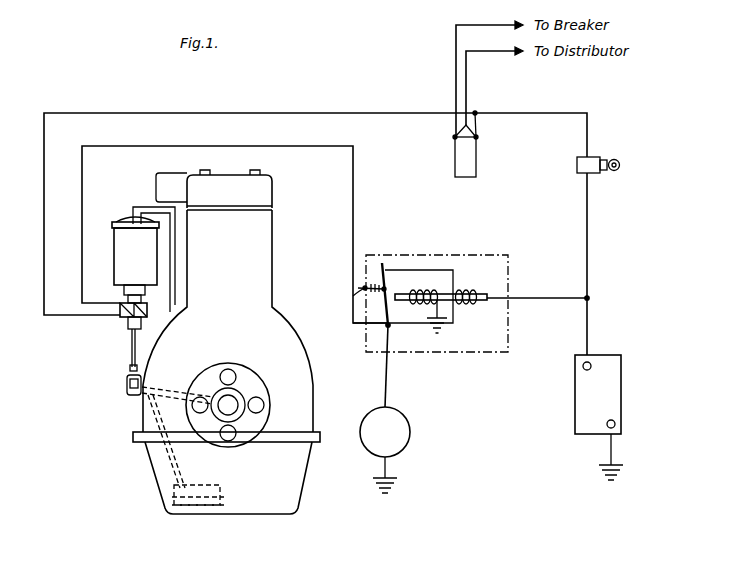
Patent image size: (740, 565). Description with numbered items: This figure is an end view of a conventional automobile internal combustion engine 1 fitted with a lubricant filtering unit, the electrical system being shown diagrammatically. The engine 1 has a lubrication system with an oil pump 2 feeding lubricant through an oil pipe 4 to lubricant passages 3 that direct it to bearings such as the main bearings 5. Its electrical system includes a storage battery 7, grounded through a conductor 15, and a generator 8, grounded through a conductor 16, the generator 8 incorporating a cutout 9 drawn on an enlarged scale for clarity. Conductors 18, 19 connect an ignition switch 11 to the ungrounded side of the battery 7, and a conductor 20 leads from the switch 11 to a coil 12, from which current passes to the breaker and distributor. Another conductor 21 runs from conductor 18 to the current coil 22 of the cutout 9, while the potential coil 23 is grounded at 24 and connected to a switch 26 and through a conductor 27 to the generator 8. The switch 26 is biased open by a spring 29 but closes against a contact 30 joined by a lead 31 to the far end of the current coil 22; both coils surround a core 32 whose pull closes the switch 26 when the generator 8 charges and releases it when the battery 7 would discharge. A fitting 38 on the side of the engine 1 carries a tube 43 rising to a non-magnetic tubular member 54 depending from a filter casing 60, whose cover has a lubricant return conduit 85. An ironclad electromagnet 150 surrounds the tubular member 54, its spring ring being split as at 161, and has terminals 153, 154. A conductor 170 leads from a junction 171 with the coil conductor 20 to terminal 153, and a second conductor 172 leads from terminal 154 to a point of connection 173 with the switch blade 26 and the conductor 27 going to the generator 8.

The internal combustion engine 1 is at (276, 256).
The oil pump 2 is at (196, 485).
The lubricant passages 3 is at (140, 402).
The oil pipe 4 is at (162, 455).
The main bearings 5 is at (226, 395).
The storage battery 7 is at (577, 401).
The generator 8 is at (412, 433).
The cutout 9 is at (508, 320).
The ignition switch 11 is at (580, 172).
The coil 12 is at (470, 151).
The conductor 15 is at (611, 449).
The conductor 16 is at (388, 468).
The conductor 18 is at (591, 319).
The conductor 19 is at (591, 241).
The conductor 20 is at (540, 113).
The conductor 21 is at (530, 298).
The current coil 22 is at (462, 303).
The potential coil 23 is at (425, 303).
The ground 24 is at (456, 325).
The switch 26 is at (370, 297).
The conductor 27 is at (385, 377).
The spring 29 is at (368, 287).
The contact 30 is at (384, 263).
The lead 31 is at (395, 270).
The core 32 is at (447, 297).
The fitting 38 is at (128, 389).
The tube 43 is at (132, 362).
The tubular member 54 is at (143, 319).
The filter casing 60 is at (120, 233).
The lubricant return conduit 85 is at (176, 244).
The electromagnet 150 is at (130, 330).
The terminal 153 is at (124, 320).
The terminal 154 is at (120, 311).
The split 161 is at (148, 310).
The conductor 170 is at (313, 113).
The junction 171 is at (475, 113).
The conductor 172 is at (340, 146).
The point of connection 173 is at (386, 327).